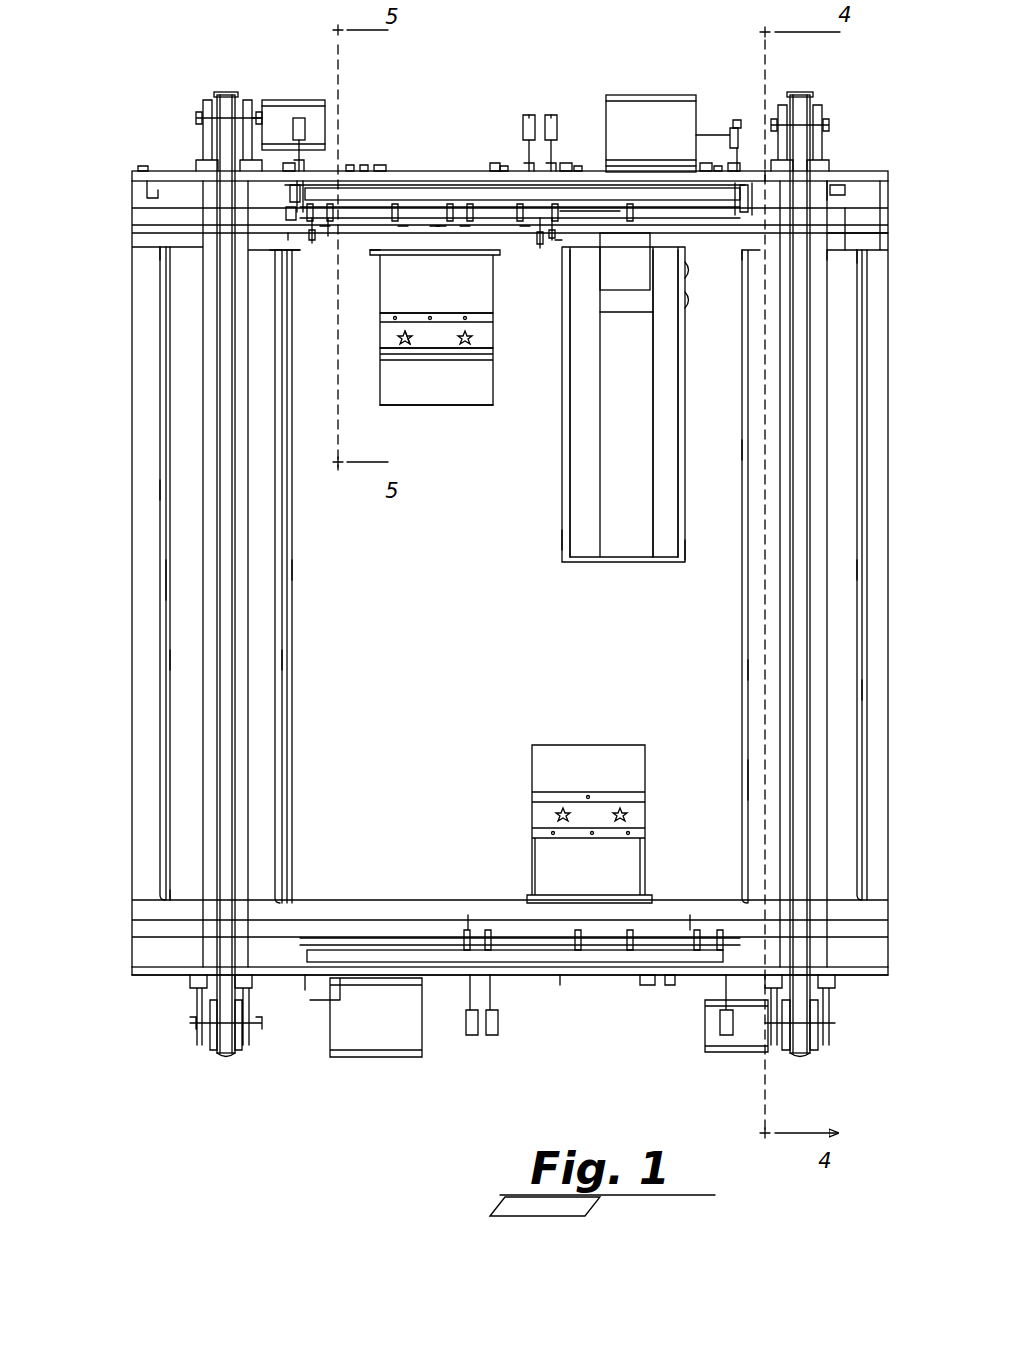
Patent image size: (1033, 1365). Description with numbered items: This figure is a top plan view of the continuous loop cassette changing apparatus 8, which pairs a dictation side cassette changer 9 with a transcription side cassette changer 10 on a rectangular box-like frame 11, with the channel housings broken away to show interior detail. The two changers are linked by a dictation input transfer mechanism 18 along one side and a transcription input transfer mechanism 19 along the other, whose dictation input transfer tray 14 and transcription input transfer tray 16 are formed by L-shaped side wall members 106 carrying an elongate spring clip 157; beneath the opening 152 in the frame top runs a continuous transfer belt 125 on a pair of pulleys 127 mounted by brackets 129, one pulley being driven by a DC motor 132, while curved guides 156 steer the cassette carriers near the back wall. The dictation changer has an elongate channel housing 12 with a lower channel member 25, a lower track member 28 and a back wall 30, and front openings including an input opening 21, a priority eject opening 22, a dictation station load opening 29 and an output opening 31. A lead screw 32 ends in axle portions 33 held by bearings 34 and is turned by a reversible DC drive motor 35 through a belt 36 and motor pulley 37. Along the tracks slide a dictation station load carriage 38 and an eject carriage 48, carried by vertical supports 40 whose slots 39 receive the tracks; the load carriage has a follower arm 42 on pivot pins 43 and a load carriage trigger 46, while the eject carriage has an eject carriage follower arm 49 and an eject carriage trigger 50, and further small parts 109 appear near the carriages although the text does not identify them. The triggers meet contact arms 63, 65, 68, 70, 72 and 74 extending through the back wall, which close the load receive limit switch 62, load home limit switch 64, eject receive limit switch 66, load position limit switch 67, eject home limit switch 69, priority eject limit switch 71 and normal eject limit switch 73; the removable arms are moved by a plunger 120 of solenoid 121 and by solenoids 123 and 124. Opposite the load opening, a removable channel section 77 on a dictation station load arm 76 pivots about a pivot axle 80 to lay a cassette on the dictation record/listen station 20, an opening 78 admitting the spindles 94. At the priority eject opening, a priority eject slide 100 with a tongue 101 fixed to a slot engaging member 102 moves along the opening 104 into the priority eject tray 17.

The continuous loop cassette changing apparatus 8 is at (142, 993).
The dictation side cassette changer 9 is at (156, 104).
The transcription side cassette changer 10 is at (612, 978).
The rectangular box-like frame 11 is at (543, 722).
The channel housing 12 is at (766, 168).
The dictation input transfer tray 14 is at (296, 594).
The transcription input transfer tray 16 is at (742, 680).
The priority eject tray 17 is at (560, 536).
The dictation input transfer mechanism 18 is at (156, 782).
The transcription input transfer mechanism 19 is at (866, 822).
The dictation record/listen station 20 is at (382, 380).
The input opening 21 is at (186, 250).
The priority eject opening 22 is at (588, 252).
The lower channel member 25 is at (850, 205).
The lower track member 28 is at (862, 228).
The dictation station load opening 29 is at (468, 248).
The back wall 30 is at (875, 181).
The output opening 31 is at (182, 898).
The lead screw 32 is at (442, 185).
The axle portions 33 is at (742, 250).
The bearings 34 is at (300, 200).
The reversible DC drive motor 35 is at (622, 95).
The belt 36 is at (732, 135).
The motor pulley 37 is at (739, 120).
The dictation station load carriage 38 is at (395, 215).
The slots 39 is at (445, 226).
The vertical supports 40 is at (325, 240).
The follower arm 42 is at (312, 243).
The pivot pins 43 is at (328, 236).
The load carriage trigger 46 is at (288, 240).
The eject carriage 48 is at (595, 220).
The eject carriage follower arm 49 is at (552, 240).
The eject carriage trigger 50 is at (540, 240).
The load receive limit switch 62 is at (140, 166).
The contact arm 63 is at (156, 181).
The load home limit switch 64 is at (288, 163).
The contact arm 65 is at (300, 225).
The eject receive limit switch 66 is at (350, 165).
The load position limit switch 67 is at (380, 165).
The contact arm 68 is at (364, 165).
The eject home limit switch 69 is at (496, 163).
The contact arm 70 is at (503, 166).
The priority eject limit switch 71 is at (568, 163).
The contact arm 72 is at (578, 166).
The normal eject limit switch 73 is at (706, 163).
The contact arm 74 is at (740, 171).
The dictation station load arm 76 is at (493, 313).
The removable channel section 77 is at (478, 362).
The opening 78 is at (478, 330).
The pivot axle 80 is at (372, 255).
The spindles 94 is at (396, 336).
The priority eject slide 100 is at (650, 260).
The tongue 101 is at (625, 261).
The slot engaging member 102 is at (629, 312).
The opening 104 is at (640, 437).
The side wall members 106 is at (168, 505).
The clip 109 is at (560, 248).
The plunger 120 is at (300, 128).
The solenoid 121 is at (305, 122).
The solenoid 123 is at (530, 115).
The solenoid 124 is at (549, 115).
The transfer belt 125 is at (226, 95).
The pulleys 127 is at (237, 100).
The brackets 129 is at (207, 106).
The DC motor 132 is at (270, 100).
The opening 152 is at (200, 585).
The curved guides 156 is at (832, 170).
The spring clip 157 is at (178, 660).